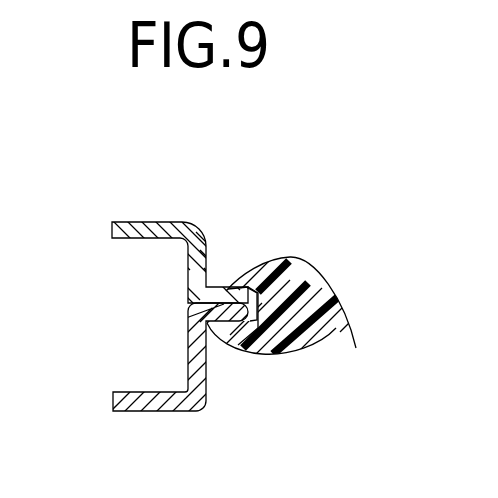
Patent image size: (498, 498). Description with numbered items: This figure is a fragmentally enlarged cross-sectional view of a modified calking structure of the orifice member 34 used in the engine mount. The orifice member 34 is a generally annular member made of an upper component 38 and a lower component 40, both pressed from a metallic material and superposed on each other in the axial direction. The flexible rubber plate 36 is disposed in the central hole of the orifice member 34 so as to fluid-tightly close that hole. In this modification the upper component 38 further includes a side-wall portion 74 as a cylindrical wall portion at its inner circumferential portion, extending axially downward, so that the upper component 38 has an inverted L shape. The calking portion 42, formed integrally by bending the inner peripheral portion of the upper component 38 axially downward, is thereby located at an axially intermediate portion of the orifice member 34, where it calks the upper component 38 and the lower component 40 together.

The orifice member 34 is at (179, 223).
The flexible rubber plate 36 is at (320, 293).
The upper component 38 is at (130, 223).
The lower component 40 is at (197, 405).
The calking portion 42 is at (250, 273).
The side-wall portion 74 is at (188, 267).